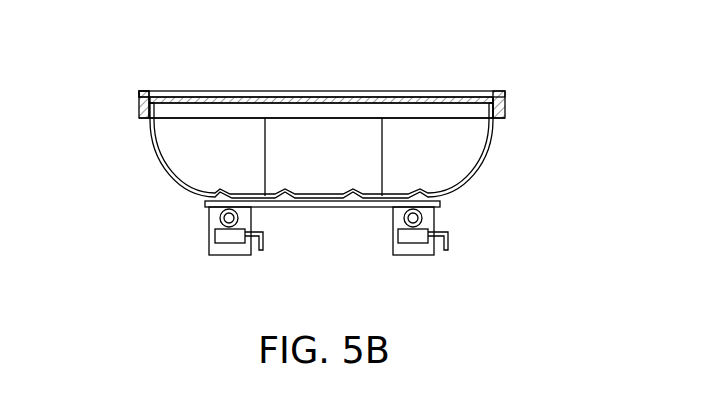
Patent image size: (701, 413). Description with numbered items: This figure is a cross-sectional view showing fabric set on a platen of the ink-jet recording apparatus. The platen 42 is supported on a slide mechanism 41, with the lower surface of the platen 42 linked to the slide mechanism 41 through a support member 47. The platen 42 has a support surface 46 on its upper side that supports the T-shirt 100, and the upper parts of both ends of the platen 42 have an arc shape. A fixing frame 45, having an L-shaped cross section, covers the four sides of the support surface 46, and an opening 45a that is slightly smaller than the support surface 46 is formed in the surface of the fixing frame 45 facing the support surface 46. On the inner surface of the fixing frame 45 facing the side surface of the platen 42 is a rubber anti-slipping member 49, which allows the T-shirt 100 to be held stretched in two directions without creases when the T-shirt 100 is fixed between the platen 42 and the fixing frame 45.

The slide mechanism 41 is at (208, 218).
The platen 42 is at (398, 112).
The fixing frame 45 is at (505, 90).
The opening 45a is at (167, 91).
The support surface 46 is at (242, 97).
The support member 47 is at (367, 167).
The anti-slipping member 49 is at (148, 118).
The T-shirt 100 is at (170, 178).